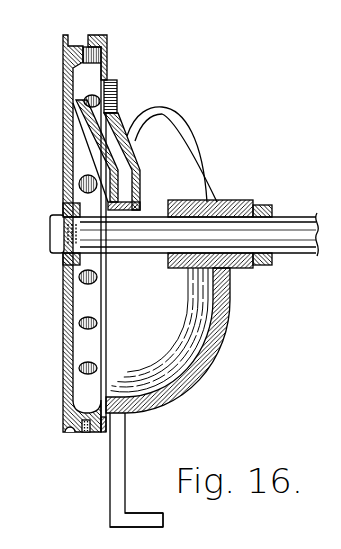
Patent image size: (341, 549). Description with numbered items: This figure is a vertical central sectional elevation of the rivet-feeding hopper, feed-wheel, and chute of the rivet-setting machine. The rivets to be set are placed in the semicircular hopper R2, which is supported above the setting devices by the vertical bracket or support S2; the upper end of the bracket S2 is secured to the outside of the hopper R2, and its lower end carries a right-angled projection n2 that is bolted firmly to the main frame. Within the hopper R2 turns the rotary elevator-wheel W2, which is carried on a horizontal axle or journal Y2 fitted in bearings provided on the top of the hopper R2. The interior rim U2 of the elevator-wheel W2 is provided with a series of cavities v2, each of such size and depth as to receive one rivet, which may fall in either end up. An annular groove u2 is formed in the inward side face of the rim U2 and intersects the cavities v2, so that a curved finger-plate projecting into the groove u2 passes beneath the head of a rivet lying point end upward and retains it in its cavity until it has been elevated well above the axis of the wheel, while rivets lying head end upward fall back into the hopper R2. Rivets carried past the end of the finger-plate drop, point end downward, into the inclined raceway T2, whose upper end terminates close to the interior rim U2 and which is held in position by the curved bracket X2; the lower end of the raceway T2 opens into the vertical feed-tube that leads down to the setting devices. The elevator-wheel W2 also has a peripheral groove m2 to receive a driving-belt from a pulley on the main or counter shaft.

The peripheral groove m2 is at (73, 438).
The annular groove u2 is at (107, 53).
The cavities v2 is at (90, 95).
The rotary elevator-wheel W2 is at (63, 160).
The inclined raceway T2 is at (110, 155).
The curved bracket X2 is at (189, 141).
The horizontal axle or journal Y2 is at (50, 234).
The semicircular hopper R2 is at (189, 306).
The interior rim U2 is at (97, 247).
The vertical bracket or support S2 is at (136, 470).
The right-angled projection n2 is at (136, 512).